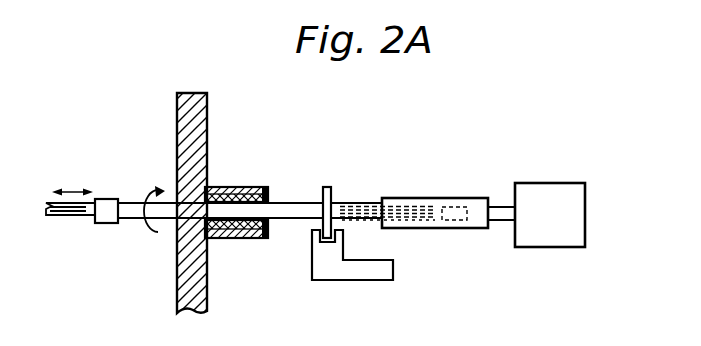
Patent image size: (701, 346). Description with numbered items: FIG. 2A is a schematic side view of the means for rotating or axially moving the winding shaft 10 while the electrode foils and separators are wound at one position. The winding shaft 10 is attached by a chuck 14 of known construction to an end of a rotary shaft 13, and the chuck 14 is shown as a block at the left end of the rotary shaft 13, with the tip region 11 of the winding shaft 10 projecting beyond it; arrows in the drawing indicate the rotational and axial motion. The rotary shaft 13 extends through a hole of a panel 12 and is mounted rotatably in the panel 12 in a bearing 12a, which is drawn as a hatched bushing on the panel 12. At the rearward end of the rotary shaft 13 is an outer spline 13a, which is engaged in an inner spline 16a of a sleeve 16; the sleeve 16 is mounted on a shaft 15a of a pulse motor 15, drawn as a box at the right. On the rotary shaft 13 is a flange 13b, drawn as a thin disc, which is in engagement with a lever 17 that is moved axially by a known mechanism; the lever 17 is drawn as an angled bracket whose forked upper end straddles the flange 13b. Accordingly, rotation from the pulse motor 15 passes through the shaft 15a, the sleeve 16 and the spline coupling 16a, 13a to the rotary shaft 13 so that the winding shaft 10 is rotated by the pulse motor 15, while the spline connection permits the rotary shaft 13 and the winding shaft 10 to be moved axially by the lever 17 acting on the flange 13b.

The winding shaft 10 is at (88, 216).
The tool tip 11 is at (38, 214).
The panel 12 is at (193, 104).
The bearing 12a is at (236, 184).
The rotary shaft 13 is at (292, 210).
The outer spline 13a is at (362, 207).
The flange 13b is at (327, 187).
The chuck 14 is at (104, 223).
The pulse motor 15 is at (550, 188).
The shaft of pulse motor 15a is at (502, 224).
The sleeve 16 is at (475, 224).
The inner spline 16a is at (445, 207).
The lever 17 is at (352, 270).